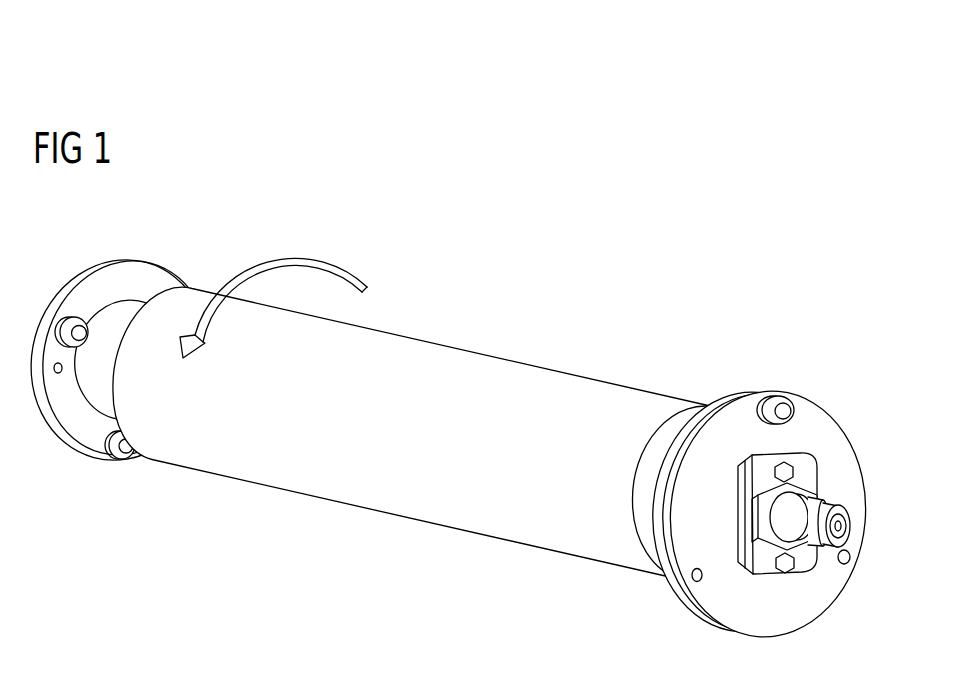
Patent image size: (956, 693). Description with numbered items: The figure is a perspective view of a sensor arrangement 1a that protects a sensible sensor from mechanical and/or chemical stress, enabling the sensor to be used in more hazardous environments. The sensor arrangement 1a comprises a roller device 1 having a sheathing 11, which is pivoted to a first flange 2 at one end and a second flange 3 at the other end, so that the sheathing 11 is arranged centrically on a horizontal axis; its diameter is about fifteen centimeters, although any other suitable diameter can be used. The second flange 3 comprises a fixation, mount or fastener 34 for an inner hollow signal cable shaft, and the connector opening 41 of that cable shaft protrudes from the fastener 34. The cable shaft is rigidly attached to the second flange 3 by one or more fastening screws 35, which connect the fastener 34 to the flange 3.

The roller device 1 is at (442, 459).
The sensor arrangement 1a is at (440, 445).
The sheathing 11 is at (485, 535).
The first flange 2 is at (95, 459).
The second flange 3 is at (693, 610).
The fastener 34 is at (768, 568).
The fastening screws 35 is at (802, 580).
The connector opening 41 is at (822, 503).